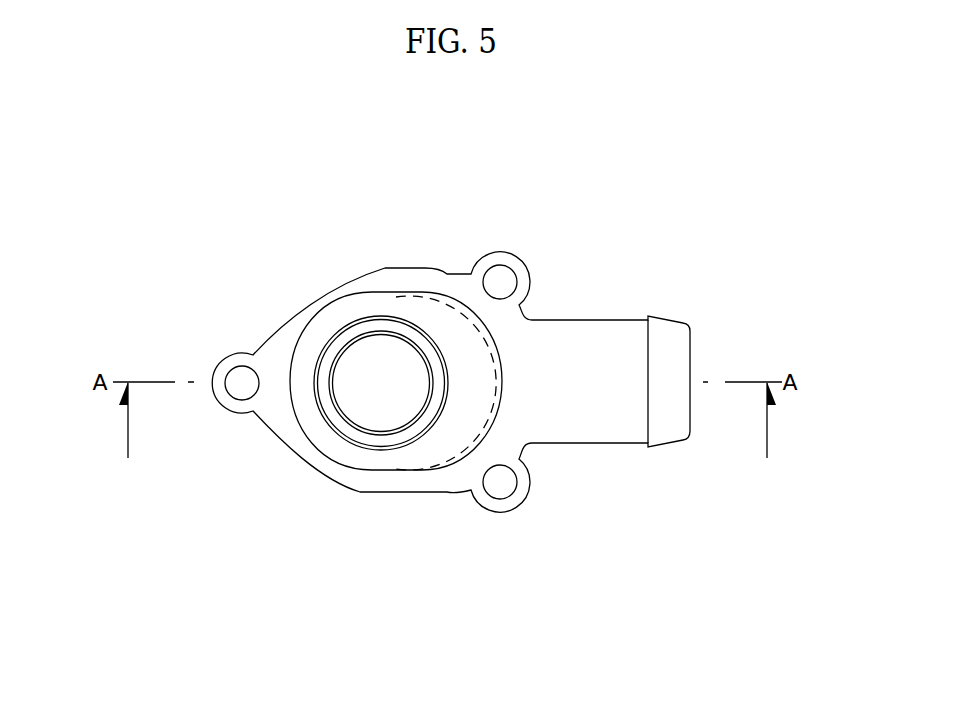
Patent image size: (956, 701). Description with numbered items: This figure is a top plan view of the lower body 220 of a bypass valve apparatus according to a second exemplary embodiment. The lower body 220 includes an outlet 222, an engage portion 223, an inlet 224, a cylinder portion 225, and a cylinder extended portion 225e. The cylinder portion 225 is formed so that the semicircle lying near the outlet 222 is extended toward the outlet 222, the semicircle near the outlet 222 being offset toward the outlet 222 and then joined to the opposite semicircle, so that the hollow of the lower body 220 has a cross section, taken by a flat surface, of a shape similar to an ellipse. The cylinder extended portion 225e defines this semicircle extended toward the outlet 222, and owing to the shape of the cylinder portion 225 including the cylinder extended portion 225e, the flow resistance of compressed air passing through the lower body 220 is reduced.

The lower body 220 is at (522, 228).
The outlet 222 is at (585, 333).
The engage portion 223 is at (477, 490).
The inlet 224 is at (386, 357).
The cylinder portion 225 is at (302, 354).
The cylinder extended portion 225e is at (458, 306).